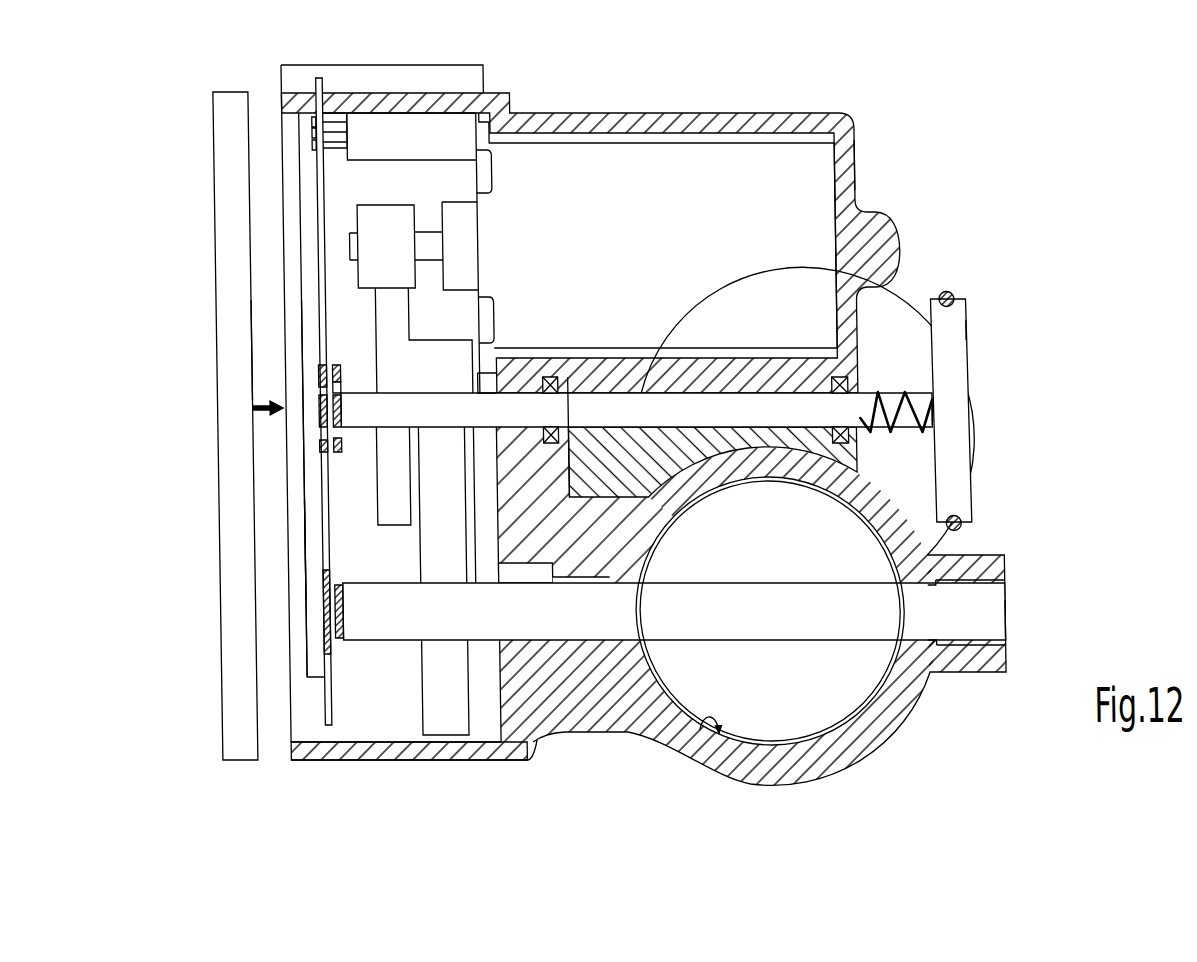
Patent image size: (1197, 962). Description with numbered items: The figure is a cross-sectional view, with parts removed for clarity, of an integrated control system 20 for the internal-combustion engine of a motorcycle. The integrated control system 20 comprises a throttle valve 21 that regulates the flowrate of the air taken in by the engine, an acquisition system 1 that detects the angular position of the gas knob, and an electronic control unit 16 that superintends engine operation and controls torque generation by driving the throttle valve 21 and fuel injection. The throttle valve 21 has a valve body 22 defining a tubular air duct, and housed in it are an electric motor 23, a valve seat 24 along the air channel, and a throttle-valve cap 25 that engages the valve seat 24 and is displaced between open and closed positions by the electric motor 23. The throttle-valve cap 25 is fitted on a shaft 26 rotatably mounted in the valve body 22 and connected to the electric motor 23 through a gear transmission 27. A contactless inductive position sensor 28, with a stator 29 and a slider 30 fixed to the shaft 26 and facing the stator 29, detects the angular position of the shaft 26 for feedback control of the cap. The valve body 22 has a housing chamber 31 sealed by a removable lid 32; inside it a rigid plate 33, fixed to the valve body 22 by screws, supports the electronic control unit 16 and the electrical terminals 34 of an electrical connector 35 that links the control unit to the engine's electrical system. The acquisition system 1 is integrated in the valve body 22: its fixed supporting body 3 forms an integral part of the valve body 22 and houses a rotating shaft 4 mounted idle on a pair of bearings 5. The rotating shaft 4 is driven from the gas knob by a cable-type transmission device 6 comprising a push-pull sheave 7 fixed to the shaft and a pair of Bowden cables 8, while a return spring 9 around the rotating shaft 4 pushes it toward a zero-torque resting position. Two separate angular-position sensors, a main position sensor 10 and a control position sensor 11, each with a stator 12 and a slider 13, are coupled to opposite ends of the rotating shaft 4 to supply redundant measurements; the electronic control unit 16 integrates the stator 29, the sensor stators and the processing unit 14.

The acquisition system 1 is at (1027, 345).
The fixed supporting body 3 is at (840, 355).
The rotating shaft 4 is at (863, 398).
The bearings 5 is at (857, 443).
The transmission device 6 is at (1040, 436).
The sheave 7 is at (960, 449).
The cables 8 is at (955, 295).
The return spring 9 is at (892, 433).
The main position sensor 10 is at (204, 350).
The control position sensor 11 is at (273, 343).
The stator 12 is at (267, 418).
The slider 13 is at (341, 394).
The processing unit 14 is at (306, 530).
The electronic control unit 16 is at (230, 550).
The integrated control system 20 is at (1004, 150).
The throttle valve 21 is at (985, 741).
The valve body 22 is at (578, 717).
The electric motor 23 is at (744, 155).
The valve seat 24 is at (667, 743).
The throttle-valve cap 25 is at (854, 683).
The shaft 26 is at (993, 618).
The gear transmission 27 is at (353, 310).
The inductive position sensor 28 is at (343, 668).
The stator 29 is at (317, 633).
The slider 30 is at (337, 582).
The housing chamber 31 is at (301, 722).
The lid 32 is at (223, 722).
The rigid plate 33 is at (325, 77).
The electrical terminals 34 is at (339, 115).
The electrical connector 35 is at (410, 87).